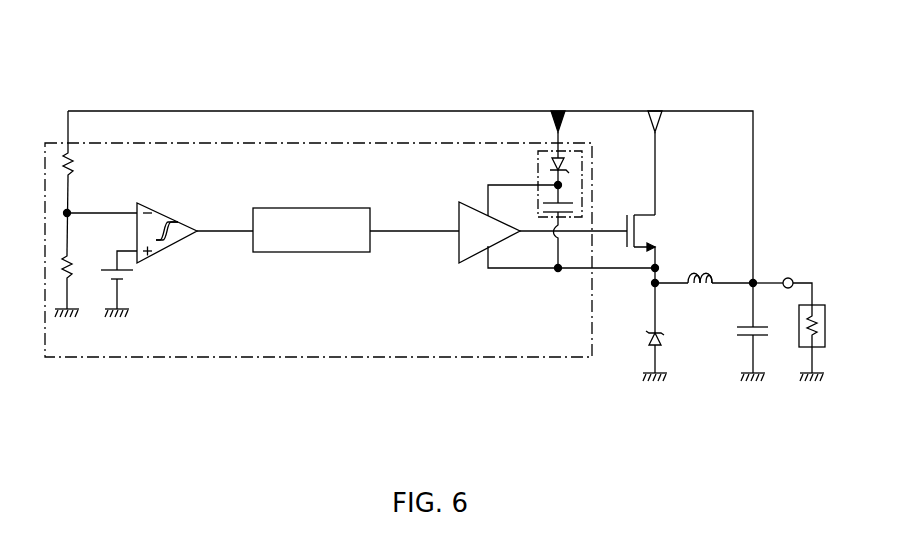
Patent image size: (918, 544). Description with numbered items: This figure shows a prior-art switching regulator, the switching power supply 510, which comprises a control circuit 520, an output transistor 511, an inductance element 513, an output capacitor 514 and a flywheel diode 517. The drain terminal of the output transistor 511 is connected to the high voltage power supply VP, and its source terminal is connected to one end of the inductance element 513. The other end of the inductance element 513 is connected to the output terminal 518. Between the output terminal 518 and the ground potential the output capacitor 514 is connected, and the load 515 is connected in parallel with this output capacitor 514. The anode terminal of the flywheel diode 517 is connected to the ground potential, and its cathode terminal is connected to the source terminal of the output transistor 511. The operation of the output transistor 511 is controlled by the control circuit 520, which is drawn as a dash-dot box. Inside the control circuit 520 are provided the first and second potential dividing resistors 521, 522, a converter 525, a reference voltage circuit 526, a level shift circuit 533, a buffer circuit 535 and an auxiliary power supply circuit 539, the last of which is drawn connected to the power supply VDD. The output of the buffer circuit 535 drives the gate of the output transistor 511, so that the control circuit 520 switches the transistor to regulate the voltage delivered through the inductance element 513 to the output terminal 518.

The switching power supply 510 is at (82, 84).
The control circuit 520 is at (398, 143).
The first potential dividing resistor 521 is at (84, 166).
The second potential dividing resistor 522 is at (77, 262).
The converter 525 is at (137, 203).
The reference voltage circuit 526 is at (130, 280).
The level shift circuit 533 is at (312, 208).
The buffer circuit 535 is at (478, 214).
The auxiliary power supply circuit 539 is at (540, 151).
The output transistor 511 is at (643, 222).
The inductance element 513 is at (705, 270).
The output capacitor 514 is at (740, 335).
The load 515 is at (800, 350).
The flywheel diode 517 is at (648, 341).
The output terminal 518 is at (788, 277).
The power supply VDD is at (562, 112).
The high voltage power supply VP is at (658, 112).